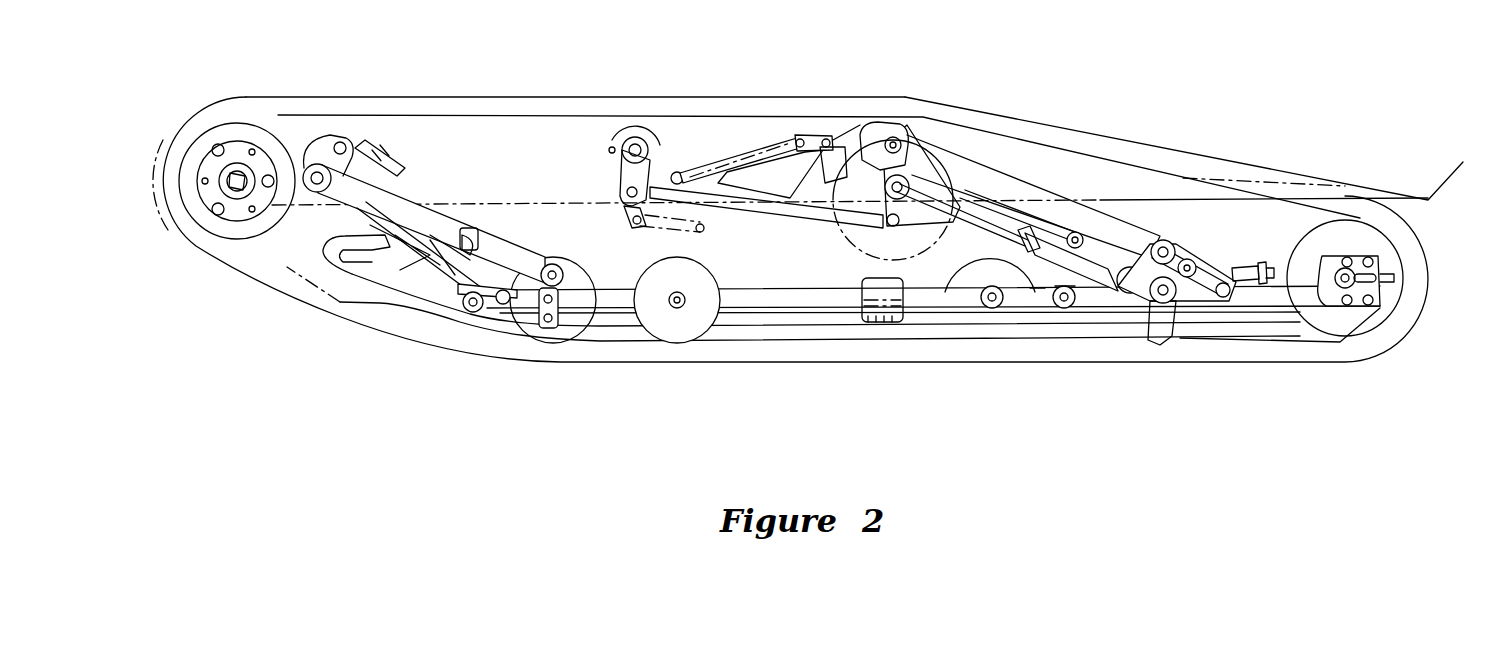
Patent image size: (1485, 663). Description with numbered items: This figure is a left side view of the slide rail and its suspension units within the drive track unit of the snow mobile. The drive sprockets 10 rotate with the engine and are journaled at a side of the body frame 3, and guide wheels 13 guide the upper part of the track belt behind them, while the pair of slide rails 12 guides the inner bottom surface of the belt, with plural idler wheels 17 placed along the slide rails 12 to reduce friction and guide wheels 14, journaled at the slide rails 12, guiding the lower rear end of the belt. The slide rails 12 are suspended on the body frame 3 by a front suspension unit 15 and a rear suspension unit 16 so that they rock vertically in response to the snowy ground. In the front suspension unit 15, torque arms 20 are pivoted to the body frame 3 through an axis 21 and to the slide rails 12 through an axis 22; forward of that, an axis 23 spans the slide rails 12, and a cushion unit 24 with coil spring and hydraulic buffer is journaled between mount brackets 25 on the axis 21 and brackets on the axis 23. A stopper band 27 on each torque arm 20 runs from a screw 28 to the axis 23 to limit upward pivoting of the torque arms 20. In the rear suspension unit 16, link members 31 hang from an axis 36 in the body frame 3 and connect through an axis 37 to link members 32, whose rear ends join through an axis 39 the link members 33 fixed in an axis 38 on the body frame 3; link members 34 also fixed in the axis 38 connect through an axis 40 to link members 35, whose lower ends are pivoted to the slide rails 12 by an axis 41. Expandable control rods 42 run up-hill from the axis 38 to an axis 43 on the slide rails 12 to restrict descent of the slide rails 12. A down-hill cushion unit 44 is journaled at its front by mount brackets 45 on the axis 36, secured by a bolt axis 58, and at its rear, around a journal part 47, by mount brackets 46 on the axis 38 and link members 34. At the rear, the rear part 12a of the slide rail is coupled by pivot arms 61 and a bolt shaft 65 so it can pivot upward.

The body frame 3 is at (1447, 183).
The drive sprockets 10 is at (202, 233).
The slide rails 12 is at (755, 335).
The rear part of the slide rail 12a is at (1290, 333).
The guide wheels 13 is at (963, 148).
The guide wheels 14 is at (1317, 230).
The front suspension unit 15 is at (401, 140).
The rear suspension unit 16 is at (786, 125).
The idler wheels 17 is at (515, 335).
The torque arms 20 is at (343, 193).
The axis 21 is at (305, 135).
The axis 22 is at (550, 260).
The axis 23 is at (470, 335).
The cushion unit 24 is at (410, 243).
The mount brackets 25 is at (319, 138).
The stopper band 27 is at (453, 205).
The screw 28 is at (412, 178).
The link members 31 is at (612, 150).
The link members 32 is at (805, 213).
The link members 33 is at (913, 307).
The link members 34 is at (1063, 200).
The link members 35 is at (1037, 290).
The axis 36 is at (633, 130).
The axis 37 is at (622, 185).
The axis 38 is at (900, 135).
The axis 39 is at (873, 213).
The axis 40 is at (1083, 237).
The axis 41 is at (1070, 307).
The control rods 42 is at (997, 227).
The axis 43 is at (1160, 320).
The cushion unit 44 is at (760, 181).
The mount brackets 45 is at (626, 215).
The mount brackets 46 is at (930, 150).
The journal part 47 is at (890, 135).
The bolt axis 58 is at (682, 240).
The pivot arms 61 is at (1198, 262).
The bolt shaft 65 is at (1167, 232).